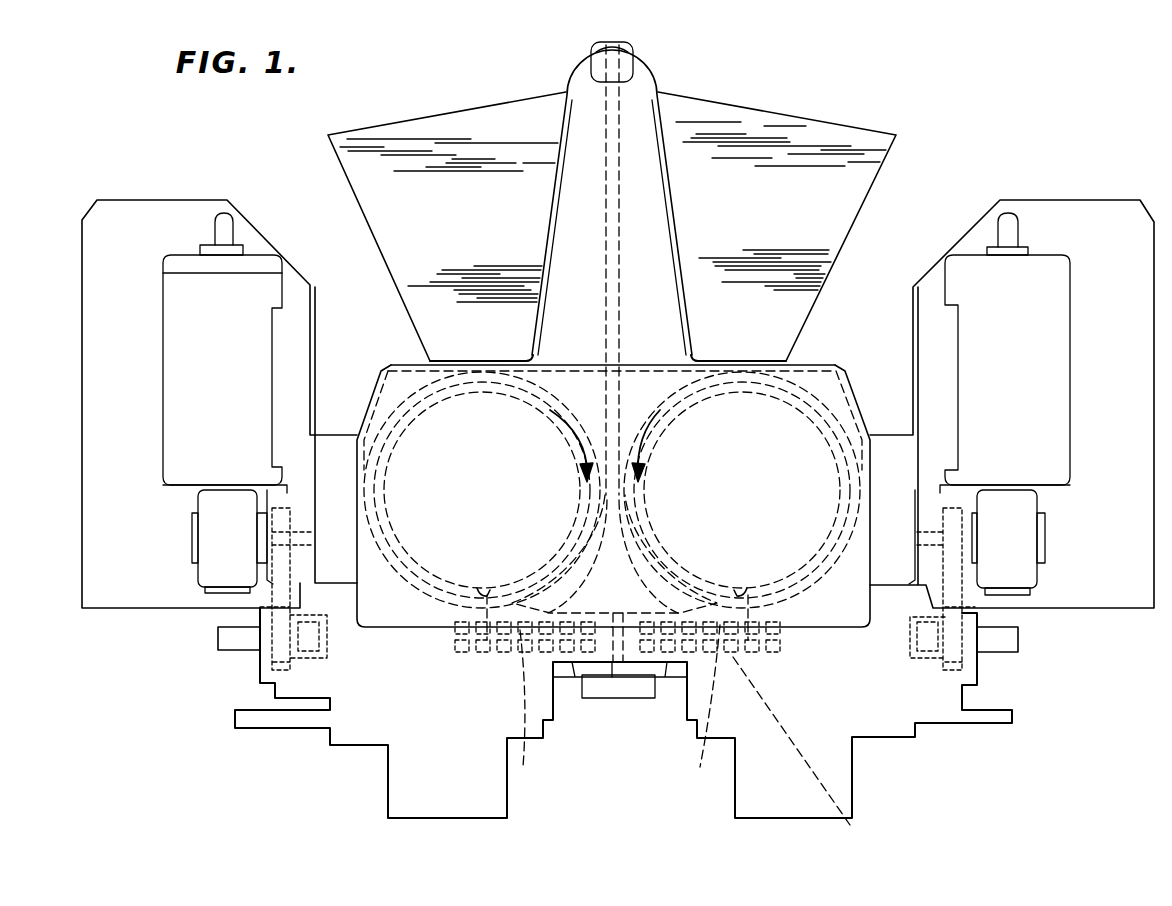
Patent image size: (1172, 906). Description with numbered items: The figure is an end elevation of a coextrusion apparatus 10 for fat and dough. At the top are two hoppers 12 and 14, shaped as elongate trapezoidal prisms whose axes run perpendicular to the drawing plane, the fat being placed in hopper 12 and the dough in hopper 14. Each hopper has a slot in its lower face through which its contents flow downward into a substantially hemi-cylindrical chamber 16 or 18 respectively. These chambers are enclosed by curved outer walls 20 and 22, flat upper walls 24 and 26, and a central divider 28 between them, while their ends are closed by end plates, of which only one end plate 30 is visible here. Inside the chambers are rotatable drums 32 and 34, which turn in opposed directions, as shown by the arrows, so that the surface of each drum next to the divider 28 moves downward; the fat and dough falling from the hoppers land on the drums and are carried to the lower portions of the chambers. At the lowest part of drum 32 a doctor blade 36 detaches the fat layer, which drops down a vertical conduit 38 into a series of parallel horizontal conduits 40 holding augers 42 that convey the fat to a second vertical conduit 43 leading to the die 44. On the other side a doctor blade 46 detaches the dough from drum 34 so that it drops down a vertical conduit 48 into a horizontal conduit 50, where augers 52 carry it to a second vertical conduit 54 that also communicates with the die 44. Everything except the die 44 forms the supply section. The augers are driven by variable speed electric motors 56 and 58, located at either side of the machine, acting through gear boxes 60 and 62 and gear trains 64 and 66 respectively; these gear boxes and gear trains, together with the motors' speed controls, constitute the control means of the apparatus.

The apparatus 10 is at (816, 88).
The hopper 12 is at (447, 207).
The hopper 14 is at (729, 207).
The hemi-cylindrical chamber 16 is at (581, 377).
The hemi-cylindrical chamber 18 is at (646, 379).
The curved outer wall 20 is at (377, 402).
The curved outer wall 22 is at (853, 417).
The flat upper wall 24 is at (409, 365).
The flat upper wall 26 is at (802, 367).
The central divider 28 is at (618, 537).
The end plate 30 is at (631, 258).
The rotatable drum 32 is at (450, 437).
The rotatable drum 34 is at (843, 368).
The doctor blade 36 is at (483, 593).
The vertical conduit 38 is at (497, 610).
The horizontal conduit 40 is at (532, 710).
The auger 42 is at (553, 698).
The second vertical conduit 43 is at (602, 642).
The die 44 is at (627, 687).
The doctor blade 46 is at (750, 592).
The vertical conduit 48 is at (730, 617).
The horizontal conduit 50 is at (807, 748).
The auger 52 is at (707, 707).
The second vertical conduit 54 is at (633, 645).
The variable speed electric motor 56 is at (207, 351).
The variable speed electric motor 58 is at (997, 364).
The gear box 60 is at (216, 548).
The gear box 62 is at (994, 541).
The gear train 64 is at (278, 597).
The gear train 66 is at (957, 563).